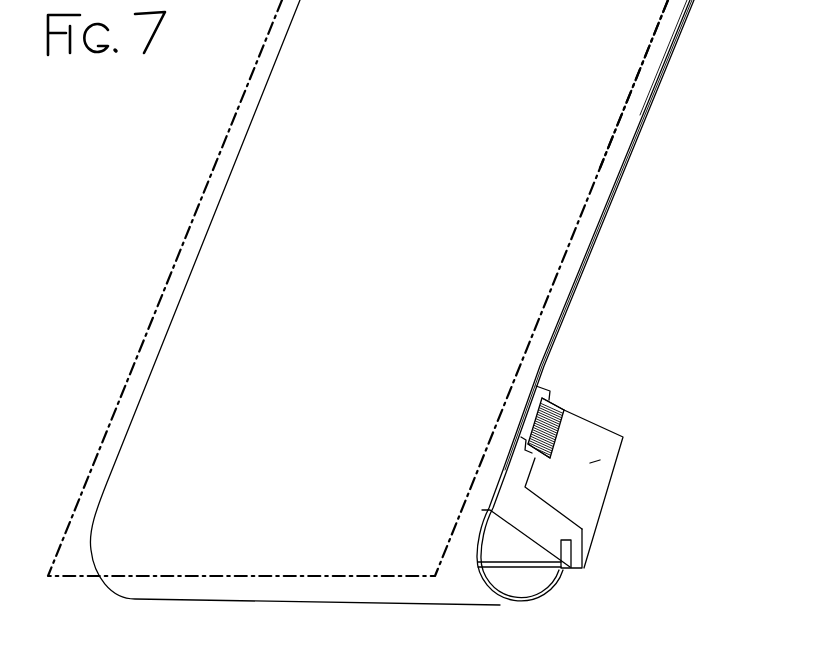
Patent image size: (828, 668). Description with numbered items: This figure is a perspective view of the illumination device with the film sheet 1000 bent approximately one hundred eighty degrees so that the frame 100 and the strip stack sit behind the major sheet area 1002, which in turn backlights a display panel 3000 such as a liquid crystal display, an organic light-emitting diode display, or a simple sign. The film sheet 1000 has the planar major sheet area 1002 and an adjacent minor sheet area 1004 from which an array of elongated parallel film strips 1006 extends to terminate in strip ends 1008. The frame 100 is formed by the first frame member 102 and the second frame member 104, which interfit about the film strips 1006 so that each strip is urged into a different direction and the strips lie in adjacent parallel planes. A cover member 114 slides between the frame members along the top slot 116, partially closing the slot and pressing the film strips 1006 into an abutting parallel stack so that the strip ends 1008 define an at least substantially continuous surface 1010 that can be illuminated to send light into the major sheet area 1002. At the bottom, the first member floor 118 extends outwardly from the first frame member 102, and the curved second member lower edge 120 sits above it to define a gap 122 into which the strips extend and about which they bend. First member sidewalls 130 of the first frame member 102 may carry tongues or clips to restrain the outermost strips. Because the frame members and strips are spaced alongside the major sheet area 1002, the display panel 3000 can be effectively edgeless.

The frame 100 is at (617, 187).
The first frame member 102 is at (623, 436).
The second frame member 104 is at (528, 520).
The cover member 114 is at (513, 398).
The top slot 116 is at (534, 385).
The first member floor 118 is at (595, 537).
The second member lower edge 120 is at (558, 588).
The gap 122 is at (583, 565).
The first member sidewalls 130 is at (590, 463).
The film sheet 1000 is at (688, 13).
The major sheet area 1002 is at (632, 100).
The minor sheet area 1004 is at (523, 570).
The film strips 1006 is at (558, 401).
The strip ends 1008 is at (562, 408).
The continuous surface 1010 is at (566, 416).
The display panel 3000 is at (205, 185).